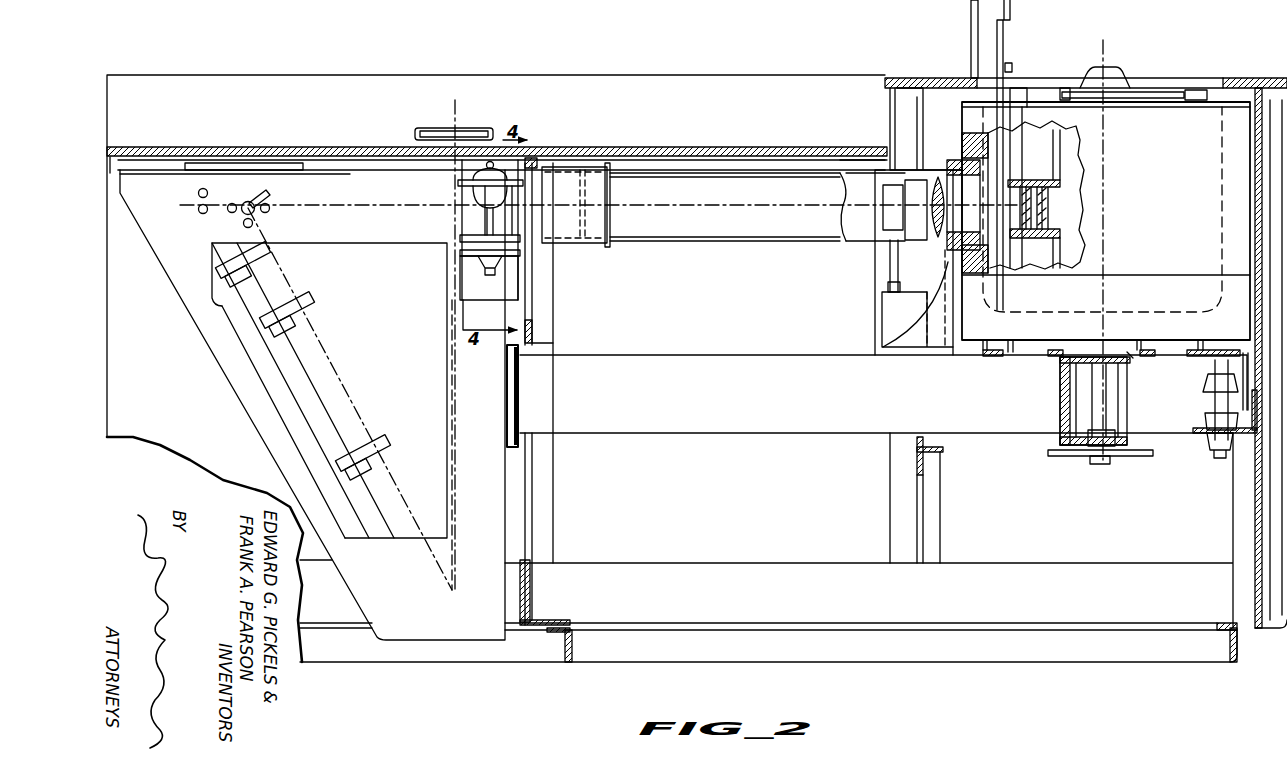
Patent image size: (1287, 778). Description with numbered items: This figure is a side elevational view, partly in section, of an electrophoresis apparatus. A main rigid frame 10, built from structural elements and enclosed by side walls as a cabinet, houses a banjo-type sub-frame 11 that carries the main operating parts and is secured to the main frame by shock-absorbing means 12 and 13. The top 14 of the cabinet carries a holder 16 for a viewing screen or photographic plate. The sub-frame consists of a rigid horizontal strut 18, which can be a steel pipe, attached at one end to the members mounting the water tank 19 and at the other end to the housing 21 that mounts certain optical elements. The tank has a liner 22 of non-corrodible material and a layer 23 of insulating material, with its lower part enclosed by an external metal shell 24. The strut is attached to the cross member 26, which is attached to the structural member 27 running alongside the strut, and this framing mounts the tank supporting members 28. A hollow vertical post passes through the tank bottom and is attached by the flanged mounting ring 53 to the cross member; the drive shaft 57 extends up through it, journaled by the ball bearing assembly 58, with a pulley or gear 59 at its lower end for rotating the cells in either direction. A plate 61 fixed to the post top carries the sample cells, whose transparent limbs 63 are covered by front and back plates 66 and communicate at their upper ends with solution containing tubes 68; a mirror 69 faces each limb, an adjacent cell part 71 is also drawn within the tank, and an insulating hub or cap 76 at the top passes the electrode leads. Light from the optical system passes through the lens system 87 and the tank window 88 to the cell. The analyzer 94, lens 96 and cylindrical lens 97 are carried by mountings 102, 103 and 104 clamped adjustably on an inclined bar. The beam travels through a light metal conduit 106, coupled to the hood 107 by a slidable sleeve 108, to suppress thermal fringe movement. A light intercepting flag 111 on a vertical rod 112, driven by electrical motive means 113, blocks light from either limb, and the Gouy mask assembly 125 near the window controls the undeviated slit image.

The main rigid frame 10 is at (505, 663).
The sub-frame 11 is at (992, 434).
The shock-absorbing means 12 is at (478, 203).
The shock-absorbing means 13 is at (1218, 404).
The top 14 is at (648, 150).
The holder 16 is at (492, 130).
The horizontal strut 18 is at (698, 430).
The water tank 19 is at (1196, 100).
The housing 21 is at (495, 470).
The liner 22 is at (1126, 314).
The layer of insulating material 23 is at (1222, 230).
The external metal shell 24 is at (1013, 342).
The cross member 26 is at (1061, 400).
The structural member 27 is at (1168, 408).
The tank supporting members 28 is at (985, 356).
The flanged mounting ring 53 is at (1128, 356).
The drive shaft 57 is at (1098, 414).
The ball bearing assembly 58 is at (1131, 454).
The pulley or gear 59 is at (1117, 455).
The plate 61 is at (1142, 90).
The limbs 63 is at (1058, 190).
The front and back plates 66 is at (1052, 233).
The solution containing tubes 68 is at (1039, 96).
The mirror 69 is at (1050, 217).
The spool core 71 is at (1048, 203).
The insulating hub or cap 76 is at (1115, 78).
The lens system 87 is at (948, 176).
The tank window 88 is at (982, 216).
The analyzer 94 is at (285, 245).
The lens 96 is at (317, 302).
The cylindrical lens 97 is at (384, 442).
The mounting 102 is at (218, 302).
The mounting 103 is at (262, 342).
The mounting 104 is at (325, 480).
The light metal conduit 106 is at (708, 242).
The hood 107 is at (536, 248).
The slidable sleeve 108 is at (598, 250).
The light intercepting flag 111 is at (883, 218).
The vertical rod 112 is at (902, 263).
The electrical motive means 113 is at (893, 319).
The Gouy mask assembly 125 is at (994, 72).